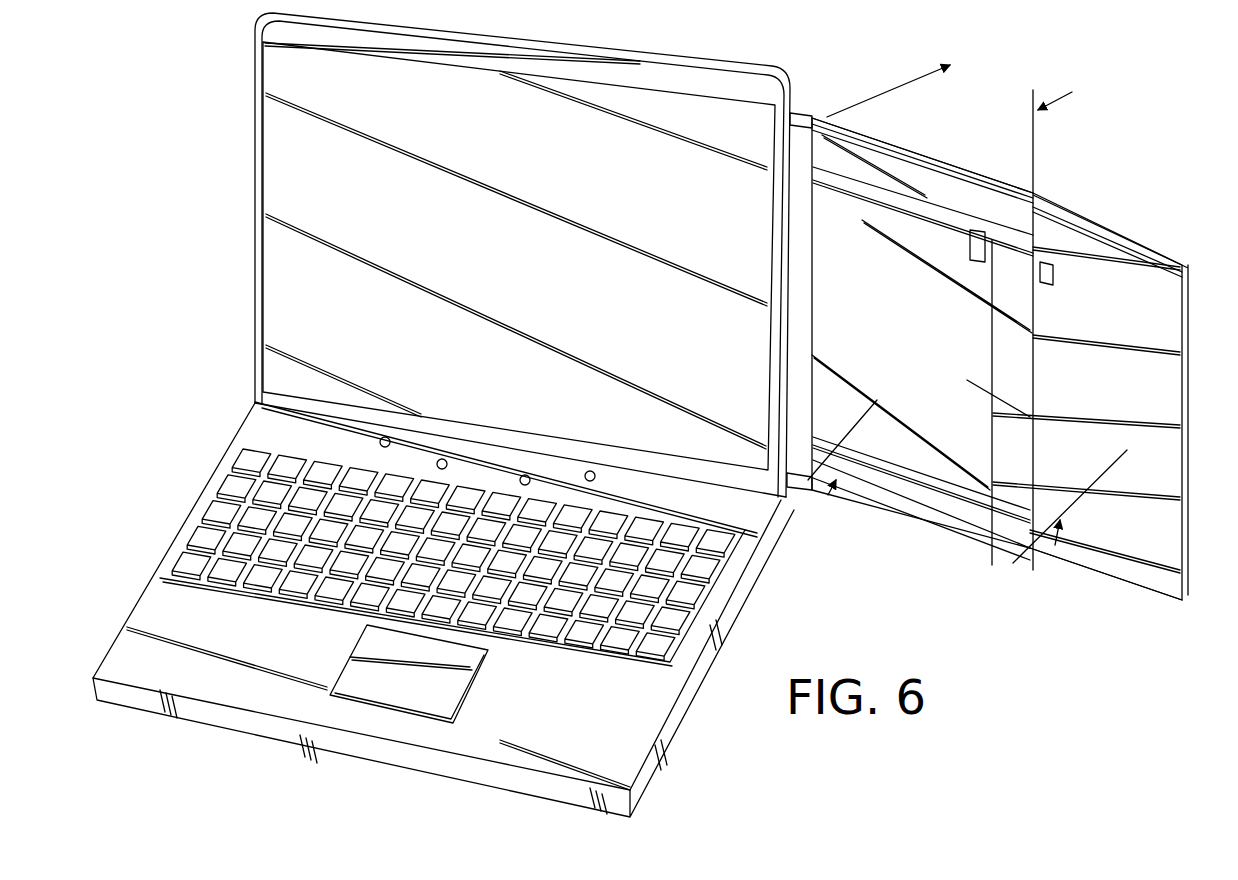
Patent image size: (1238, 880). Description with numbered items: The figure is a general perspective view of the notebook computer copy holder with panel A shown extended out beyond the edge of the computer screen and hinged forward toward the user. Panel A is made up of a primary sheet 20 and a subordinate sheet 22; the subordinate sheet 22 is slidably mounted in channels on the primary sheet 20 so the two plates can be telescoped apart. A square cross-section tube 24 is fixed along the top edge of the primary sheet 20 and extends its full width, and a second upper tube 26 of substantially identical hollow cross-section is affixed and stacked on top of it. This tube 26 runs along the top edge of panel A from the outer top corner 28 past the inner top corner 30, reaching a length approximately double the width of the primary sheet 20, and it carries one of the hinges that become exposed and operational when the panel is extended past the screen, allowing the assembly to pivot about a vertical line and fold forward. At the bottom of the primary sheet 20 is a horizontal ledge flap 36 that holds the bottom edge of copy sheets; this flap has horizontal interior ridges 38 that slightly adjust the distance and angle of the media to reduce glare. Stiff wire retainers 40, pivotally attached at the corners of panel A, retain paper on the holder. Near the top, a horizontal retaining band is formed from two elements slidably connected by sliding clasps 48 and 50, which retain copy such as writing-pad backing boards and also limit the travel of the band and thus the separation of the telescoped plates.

The primary sheet 20 is at (988, 170).
The subordinate sheet 22 is at (1165, 255).
The square cross-section tube 24 is at (1034, 205).
The second upper tube 26 is at (821, 112).
The outer top corner 28 is at (1085, 235).
The inner top corner 30 is at (838, 120).
The horizontal ledge flap 36 is at (978, 515).
The horizontal interior ridges 38 is at (945, 505).
The stiff wire retainers 40 is at (940, 60).
The sliding clasp 48 is at (979, 236).
The sliding clasp 50 is at (1056, 257).
The panel A is at (925, 155).